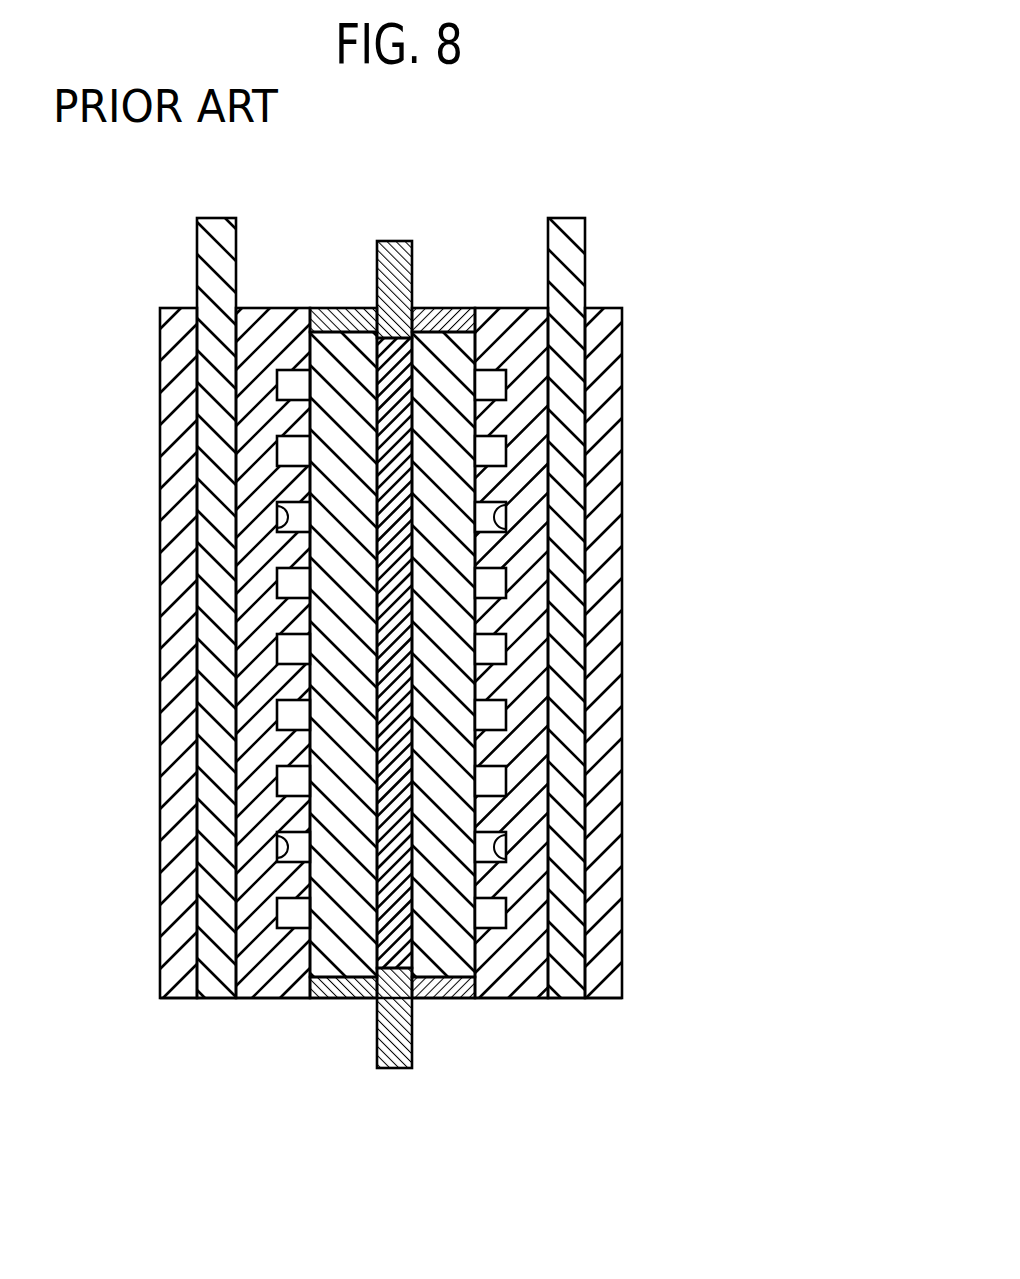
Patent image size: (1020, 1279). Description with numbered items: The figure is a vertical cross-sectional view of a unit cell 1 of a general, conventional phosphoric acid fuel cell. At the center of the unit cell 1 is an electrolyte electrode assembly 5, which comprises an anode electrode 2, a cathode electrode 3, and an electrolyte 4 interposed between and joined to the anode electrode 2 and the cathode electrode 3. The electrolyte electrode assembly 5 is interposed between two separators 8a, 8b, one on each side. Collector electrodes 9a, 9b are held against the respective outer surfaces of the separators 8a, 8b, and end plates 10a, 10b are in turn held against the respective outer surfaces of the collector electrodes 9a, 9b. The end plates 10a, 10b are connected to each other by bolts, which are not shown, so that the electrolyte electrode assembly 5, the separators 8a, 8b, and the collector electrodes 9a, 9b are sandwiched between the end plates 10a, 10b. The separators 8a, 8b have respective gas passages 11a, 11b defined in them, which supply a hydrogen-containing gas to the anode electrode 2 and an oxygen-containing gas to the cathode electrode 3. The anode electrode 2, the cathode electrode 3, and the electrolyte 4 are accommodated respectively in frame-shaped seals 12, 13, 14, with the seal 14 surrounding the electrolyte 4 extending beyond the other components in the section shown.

The unit cell 1 is at (503, 163).
The anode electrode 2 is at (339, 947).
The cathode electrode 3 is at (447, 945).
The electrolyte 4 is at (400, 1069).
The electrolyte electrode assembly 5 is at (478, 1113).
The separator 8a is at (280, 327).
The separator 8b is at (507, 327).
The collector electrode 9a is at (220, 235).
The collector electrode 9b is at (572, 235).
The end plate 10a is at (160, 383).
The end plate 10b is at (622, 385).
The gas passage 11a is at (277, 528).
The gas passage 11b is at (506, 527).
The frame-shaped seal 12 is at (342, 327).
The frame-shaped seal 13 is at (437, 327).
The frame-shaped seal 14 is at (393, 262).